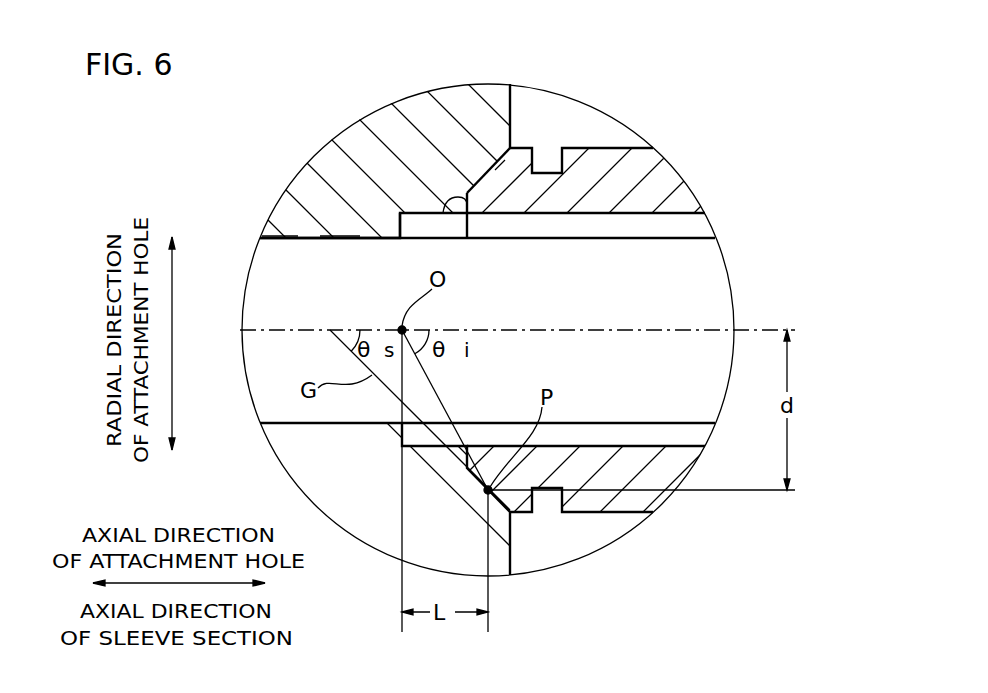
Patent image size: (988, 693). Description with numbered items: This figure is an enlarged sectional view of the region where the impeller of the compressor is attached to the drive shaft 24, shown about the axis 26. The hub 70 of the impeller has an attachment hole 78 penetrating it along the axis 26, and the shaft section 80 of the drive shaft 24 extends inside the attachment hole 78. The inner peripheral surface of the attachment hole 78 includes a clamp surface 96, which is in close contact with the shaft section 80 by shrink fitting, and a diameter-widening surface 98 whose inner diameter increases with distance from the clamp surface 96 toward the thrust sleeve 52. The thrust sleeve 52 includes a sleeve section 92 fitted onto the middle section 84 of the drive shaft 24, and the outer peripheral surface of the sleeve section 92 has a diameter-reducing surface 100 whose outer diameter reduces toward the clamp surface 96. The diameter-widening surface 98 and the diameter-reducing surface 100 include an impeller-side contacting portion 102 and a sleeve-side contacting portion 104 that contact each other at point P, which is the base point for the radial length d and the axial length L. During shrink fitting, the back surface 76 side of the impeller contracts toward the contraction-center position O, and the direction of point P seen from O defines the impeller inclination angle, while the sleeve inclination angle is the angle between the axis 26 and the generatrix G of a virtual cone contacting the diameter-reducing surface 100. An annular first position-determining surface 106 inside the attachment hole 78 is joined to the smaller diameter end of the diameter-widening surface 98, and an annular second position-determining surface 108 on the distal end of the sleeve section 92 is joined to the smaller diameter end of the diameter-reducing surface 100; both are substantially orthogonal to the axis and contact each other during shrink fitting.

The hub 70 is at (330, 150).
The shaft section 80 is at (277, 383).
The sleeve section 92 is at (593, 160).
The thrust sleeve 52 is at (643, 162).
The back surface 76 is at (512, 104).
The drive shaft 24 is at (695, 238).
The axis 26 is at (653, 330).
The middle section 84 is at (703, 302).
The attachment hole 78 is at (300, 240).
The clamp surface 96 is at (355, 240).
The second position-determining surface 108 is at (455, 213).
The diameter-widening surface 98 is at (497, 190).
The impeller-side contacting portion 102 is at (483, 193).
The first position-determining surface 106 is at (486, 205).
The diameter-reducing surface 100 is at (483, 188).
The sleeve-side contacting portion 104 is at (497, 200).